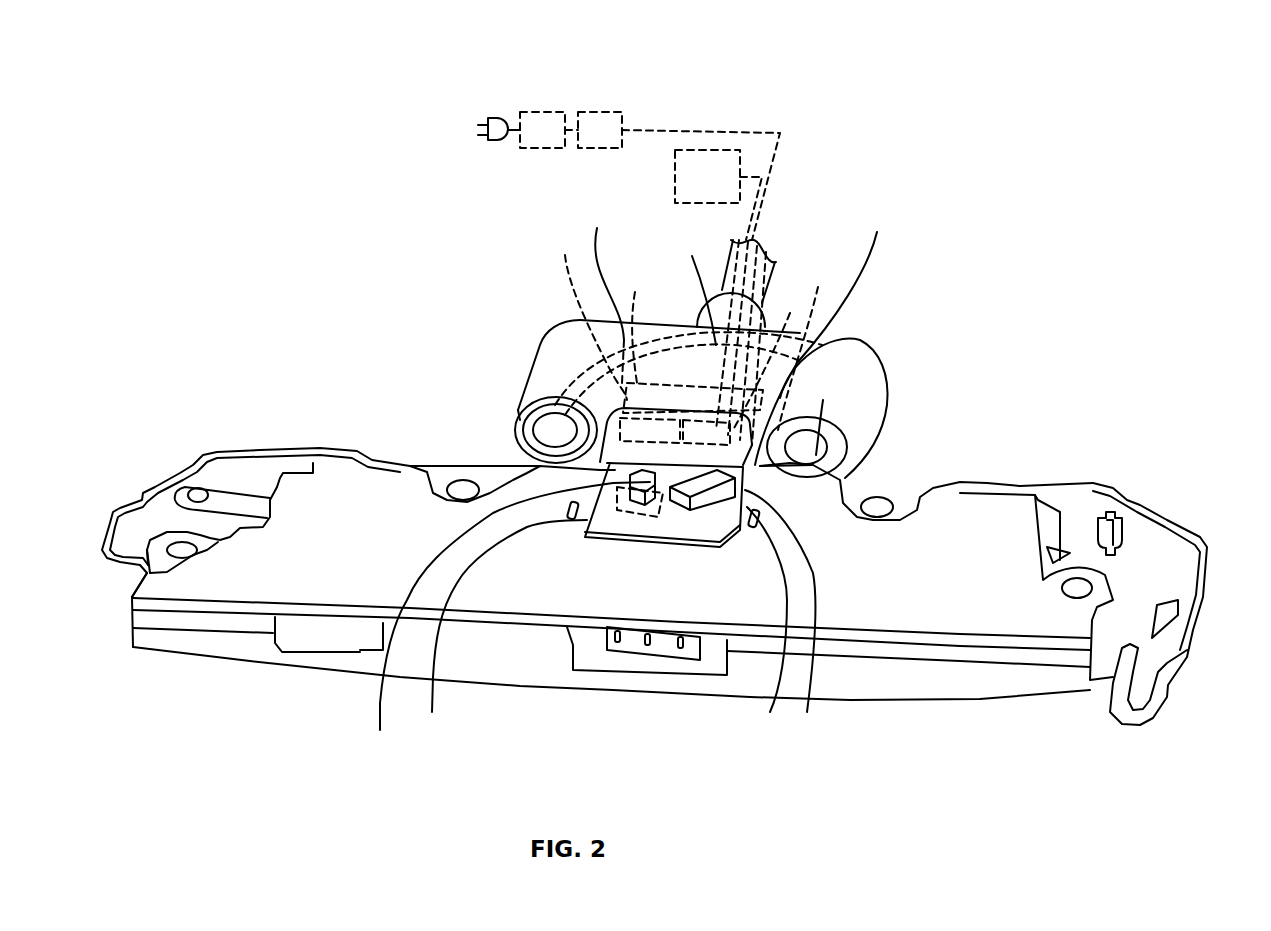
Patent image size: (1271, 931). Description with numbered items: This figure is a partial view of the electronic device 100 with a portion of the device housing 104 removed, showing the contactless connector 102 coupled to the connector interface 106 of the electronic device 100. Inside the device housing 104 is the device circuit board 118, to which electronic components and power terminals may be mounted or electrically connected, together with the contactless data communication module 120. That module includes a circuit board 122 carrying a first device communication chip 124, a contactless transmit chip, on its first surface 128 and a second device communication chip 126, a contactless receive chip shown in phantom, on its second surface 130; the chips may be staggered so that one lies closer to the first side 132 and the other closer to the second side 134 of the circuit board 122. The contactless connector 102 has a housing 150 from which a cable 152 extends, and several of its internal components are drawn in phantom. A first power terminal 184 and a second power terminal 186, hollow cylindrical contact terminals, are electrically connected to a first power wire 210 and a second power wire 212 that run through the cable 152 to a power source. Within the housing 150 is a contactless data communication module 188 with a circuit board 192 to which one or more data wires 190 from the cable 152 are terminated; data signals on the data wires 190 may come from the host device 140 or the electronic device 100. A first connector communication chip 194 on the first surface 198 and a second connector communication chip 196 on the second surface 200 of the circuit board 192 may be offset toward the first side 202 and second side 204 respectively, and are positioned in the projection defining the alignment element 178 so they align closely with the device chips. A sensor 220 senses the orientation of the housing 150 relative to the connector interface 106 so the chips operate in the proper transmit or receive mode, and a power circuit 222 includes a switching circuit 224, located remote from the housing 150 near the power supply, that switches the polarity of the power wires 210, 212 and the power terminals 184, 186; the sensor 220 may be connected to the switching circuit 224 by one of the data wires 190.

The electronic device 100 is at (1068, 466).
The contactless connector 102 is at (905, 297).
The device housing 104 is at (1153, 537).
The connector interface 106 is at (617, 413).
The device circuit board 118 is at (550, 593).
The contactless data communication module 120 is at (675, 519).
The circuit board 122 is at (703, 480).
The first device communication chip 124 is at (710, 530).
The second device communication chip 126 is at (617, 510).
The first surface 128 is at (599, 617).
The second surface 130 is at (592, 547).
The first side 132 is at (760, 497).
The second side 134 is at (589, 615).
The host device 140 is at (677, 165).
The housing 150 is at (857, 382).
The cable 152 is at (775, 262).
The alignment element 178 is at (570, 430).
The first power terminal 184 is at (833, 457).
The second power terminal 186 is at (525, 433).
The contactless data communication module 188 is at (673, 396).
The data wires 190 is at (696, 287).
The circuit board 192 is at (811, 346).
The first connector communication chip 194 is at (771, 359).
The second connector communication chip 196 is at (587, 315).
The first surface 198 is at (820, 345).
The second surface 200 is at (823, 400).
The first side 202 is at (787, 447).
The second side 204 is at (620, 415).
The first power wire 210 is at (829, 338).
The second power wire 212 is at (607, 292).
The sensor 220 is at (647, 354).
The power circuit 222 is at (535, 108).
The switching circuit 224 is at (604, 108).